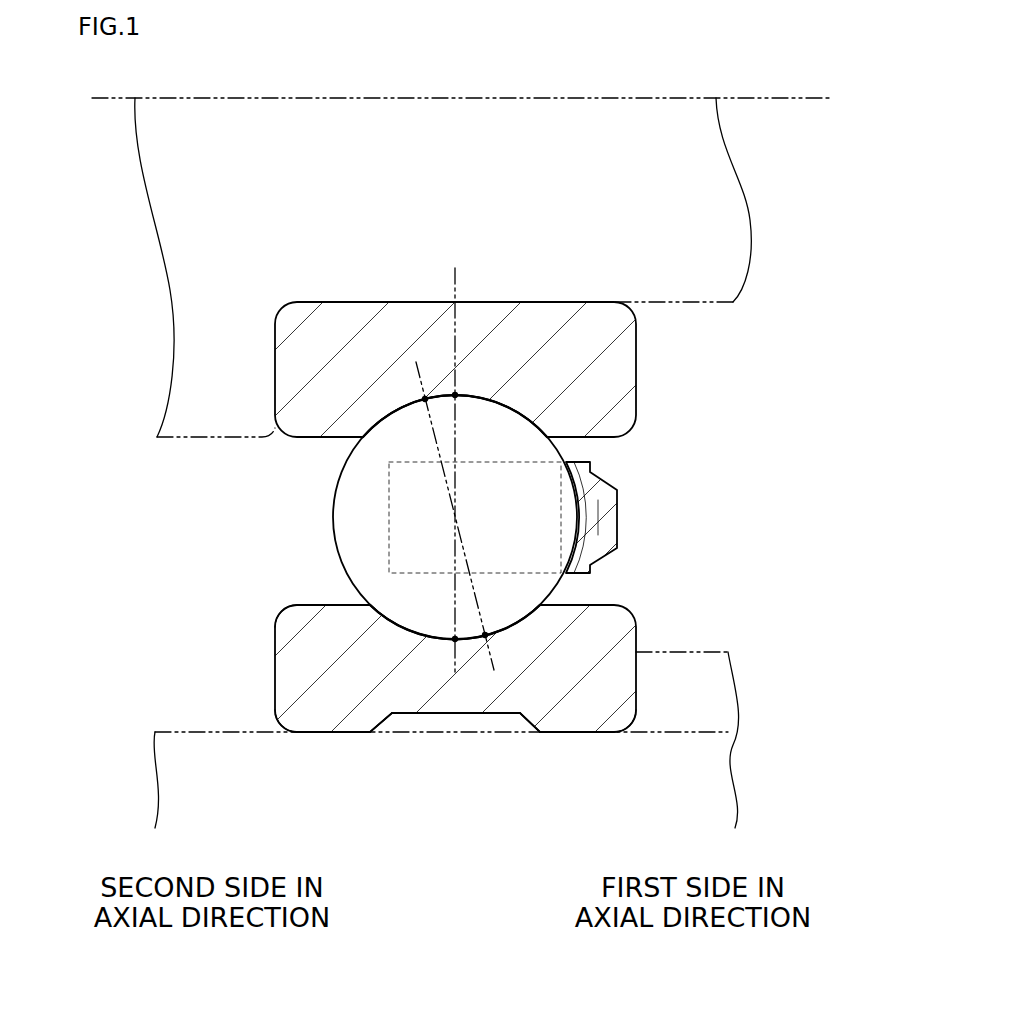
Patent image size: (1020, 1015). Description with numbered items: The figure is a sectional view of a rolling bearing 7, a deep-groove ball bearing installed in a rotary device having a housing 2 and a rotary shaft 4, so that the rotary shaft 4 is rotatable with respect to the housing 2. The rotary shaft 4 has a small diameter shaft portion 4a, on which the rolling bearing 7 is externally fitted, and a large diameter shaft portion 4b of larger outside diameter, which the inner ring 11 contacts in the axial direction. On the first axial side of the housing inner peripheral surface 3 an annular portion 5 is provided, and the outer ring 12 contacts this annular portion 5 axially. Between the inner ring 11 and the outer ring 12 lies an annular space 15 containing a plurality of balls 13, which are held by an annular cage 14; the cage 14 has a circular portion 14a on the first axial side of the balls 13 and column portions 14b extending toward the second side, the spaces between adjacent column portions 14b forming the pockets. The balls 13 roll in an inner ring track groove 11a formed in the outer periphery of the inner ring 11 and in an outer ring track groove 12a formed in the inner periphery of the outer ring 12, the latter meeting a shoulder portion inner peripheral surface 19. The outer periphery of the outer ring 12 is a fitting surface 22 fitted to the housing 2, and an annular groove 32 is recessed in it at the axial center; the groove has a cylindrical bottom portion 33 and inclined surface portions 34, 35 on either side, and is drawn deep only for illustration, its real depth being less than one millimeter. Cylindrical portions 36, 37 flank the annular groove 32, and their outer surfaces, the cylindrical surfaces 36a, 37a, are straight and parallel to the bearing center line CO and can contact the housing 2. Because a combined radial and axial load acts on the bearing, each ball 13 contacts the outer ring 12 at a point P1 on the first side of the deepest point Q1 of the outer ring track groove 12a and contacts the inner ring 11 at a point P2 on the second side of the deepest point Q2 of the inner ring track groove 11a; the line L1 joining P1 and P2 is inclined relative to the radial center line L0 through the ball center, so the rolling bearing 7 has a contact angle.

The bearing center line CO is at (775, 100).
The housing 2 is at (180, 728).
The housing inner peripheral surface 3 is at (230, 730).
The rotary shaft 4 is at (182, 440).
The small diameter shaft portion 4a is at (706, 304).
The large diameter shaft portion 4b is at (226, 440).
The annular portion 5 is at (688, 665).
The rolling bearing 7 is at (479, 476).
The inner ring 11 is at (637, 363).
The inner ring track groove 11a is at (398, 410).
The outer ring 12 is at (637, 630).
The outer ring track groove 12a is at (365, 595).
The ball 13 is at (333, 515).
The cage 14 is at (618, 510).
The circular portion 14a is at (604, 517).
The column portion 14b is at (389, 537).
The annular space 15 is at (631, 520).
The shoulder portion inner peripheral surface 19 is at (300, 605).
The fitting surface 22 is at (356, 735).
The annular groove 32 is at (456, 716).
The bottom portion 33 is at (425, 714).
The inclined surface portion 34 is at (524, 722).
The inclined surface portion 35 is at (385, 722).
The cylindrical portion 36 is at (607, 723).
The cylindrical surface 36a is at (583, 721).
The cylindrical portion 37 is at (305, 723).
The cylindrical surface 37a is at (328, 733).
The center line L0 is at (458, 283).
The line connecting contact points L1 is at (445, 478).
The contact point with outer ring P1 is at (486, 634).
The contact point with inner ring P2 is at (425, 401).
The deepest point of outer ring track groove Q1 is at (455, 638).
The deepest point of inner ring track groove Q2 is at (455, 397).